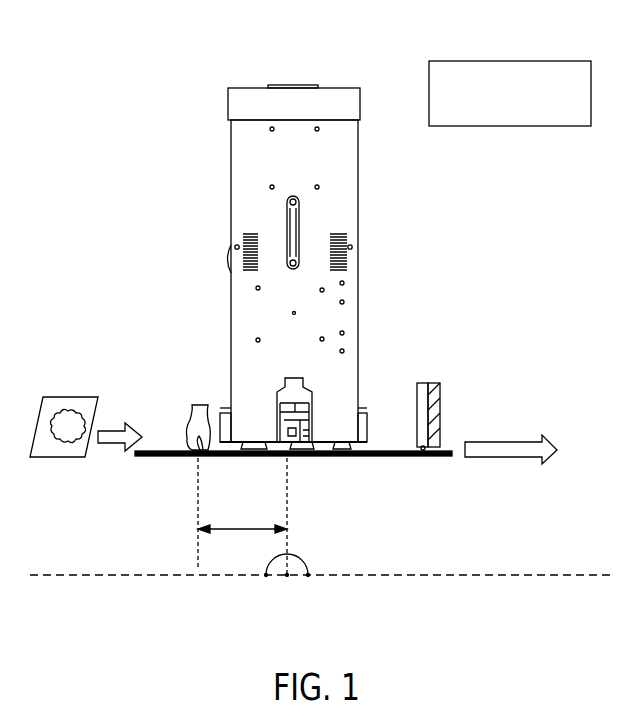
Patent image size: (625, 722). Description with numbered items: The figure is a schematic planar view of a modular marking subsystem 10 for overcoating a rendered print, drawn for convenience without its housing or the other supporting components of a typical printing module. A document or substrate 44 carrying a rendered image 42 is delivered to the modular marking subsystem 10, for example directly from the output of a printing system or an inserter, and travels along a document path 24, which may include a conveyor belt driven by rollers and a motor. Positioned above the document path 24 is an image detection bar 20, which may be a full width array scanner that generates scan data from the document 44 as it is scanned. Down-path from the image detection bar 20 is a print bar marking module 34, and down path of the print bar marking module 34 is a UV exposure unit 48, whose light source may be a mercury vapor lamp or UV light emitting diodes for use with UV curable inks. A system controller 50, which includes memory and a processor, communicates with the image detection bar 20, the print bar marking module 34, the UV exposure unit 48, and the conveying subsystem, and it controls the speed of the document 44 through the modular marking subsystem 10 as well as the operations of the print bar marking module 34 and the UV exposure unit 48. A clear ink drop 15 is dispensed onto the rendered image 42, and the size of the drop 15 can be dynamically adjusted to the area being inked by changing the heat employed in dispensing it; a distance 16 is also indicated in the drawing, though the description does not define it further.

The modular marking subsystem 10 is at (122, 148).
The clear ink drop 15 is at (281, 567).
The distance 16 is at (237, 527).
The image detection bar 20 is at (197, 393).
The document path 24 is at (393, 458).
The print bar marking module 34 is at (358, 203).
The rendered image 42 is at (68, 412).
The document or substrate 44 is at (48, 402).
The UV exposure unit 48 is at (424, 372).
The system controller 50 is at (498, 60).